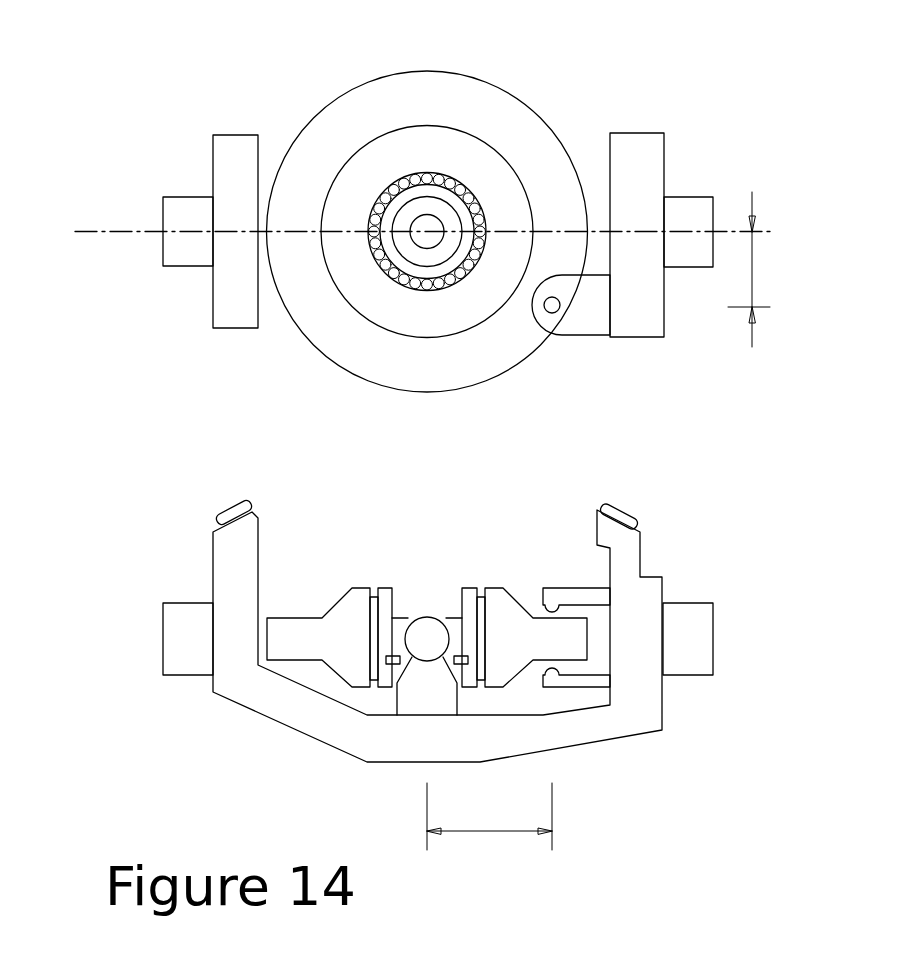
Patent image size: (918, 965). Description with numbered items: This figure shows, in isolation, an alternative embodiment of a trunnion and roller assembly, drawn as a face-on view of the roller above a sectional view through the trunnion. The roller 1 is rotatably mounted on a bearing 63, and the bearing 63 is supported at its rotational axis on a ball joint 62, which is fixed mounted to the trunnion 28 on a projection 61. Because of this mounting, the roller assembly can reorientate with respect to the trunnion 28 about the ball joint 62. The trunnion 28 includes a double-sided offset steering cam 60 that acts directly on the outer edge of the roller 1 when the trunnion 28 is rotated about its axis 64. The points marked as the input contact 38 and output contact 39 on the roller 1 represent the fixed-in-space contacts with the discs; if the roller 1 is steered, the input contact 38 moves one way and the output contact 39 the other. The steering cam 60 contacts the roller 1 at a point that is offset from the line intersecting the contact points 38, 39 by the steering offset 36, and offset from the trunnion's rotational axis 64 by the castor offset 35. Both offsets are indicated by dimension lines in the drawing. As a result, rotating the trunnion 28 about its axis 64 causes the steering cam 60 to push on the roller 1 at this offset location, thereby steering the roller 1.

The roller 1 is at (341, 333).
The trunnion 28 is at (257, 690).
The castor offset 35 is at (768, 240).
The steering offset 36 is at (498, 870).
The input contact point 38 is at (438, 289).
The output contact point 39 is at (427, 205).
The steering cam 60 is at (627, 534).
The projection 61 is at (432, 700).
The ball joint 62 is at (426, 637).
The bearing 63 is at (372, 658).
The axis 64 is at (400, 390).